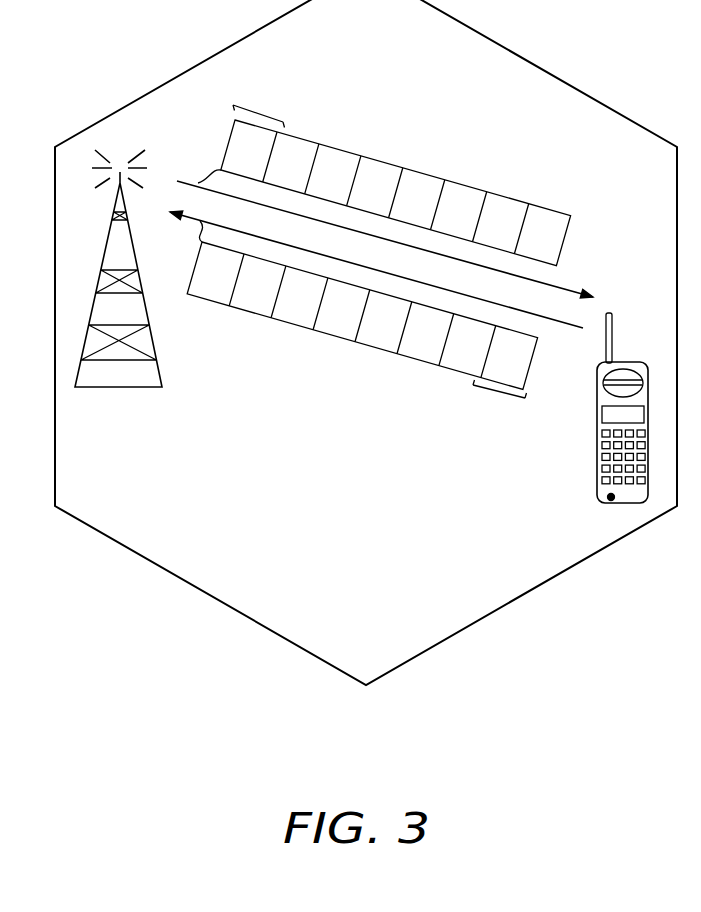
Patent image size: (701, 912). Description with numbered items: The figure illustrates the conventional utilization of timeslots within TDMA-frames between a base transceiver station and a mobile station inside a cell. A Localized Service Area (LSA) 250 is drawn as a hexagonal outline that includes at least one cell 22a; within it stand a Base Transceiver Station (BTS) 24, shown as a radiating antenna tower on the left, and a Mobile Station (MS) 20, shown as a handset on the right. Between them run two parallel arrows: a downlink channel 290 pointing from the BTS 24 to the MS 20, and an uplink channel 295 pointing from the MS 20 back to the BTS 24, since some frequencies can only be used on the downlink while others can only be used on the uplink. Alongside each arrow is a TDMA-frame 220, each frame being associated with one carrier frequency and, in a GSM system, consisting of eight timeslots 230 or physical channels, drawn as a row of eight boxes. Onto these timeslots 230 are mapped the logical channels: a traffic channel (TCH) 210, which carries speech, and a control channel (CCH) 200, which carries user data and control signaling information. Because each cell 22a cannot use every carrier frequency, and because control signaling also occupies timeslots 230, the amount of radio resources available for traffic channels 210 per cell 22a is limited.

The Mobile Station 20 is at (597, 478).
The cell 22a is at (498, 606).
The Base Transceiver Station 24 is at (118, 389).
The control channel 200 is at (285, 328).
The traffic channel 210 is at (413, 365).
The TDMA-frame 220 is at (186, 318).
The timeslot 230 is at (385, 252).
The Localized Service Area 250 is at (163, 620).
The downlink channel 290 is at (553, 286).
The uplink channel 295 is at (555, 322).